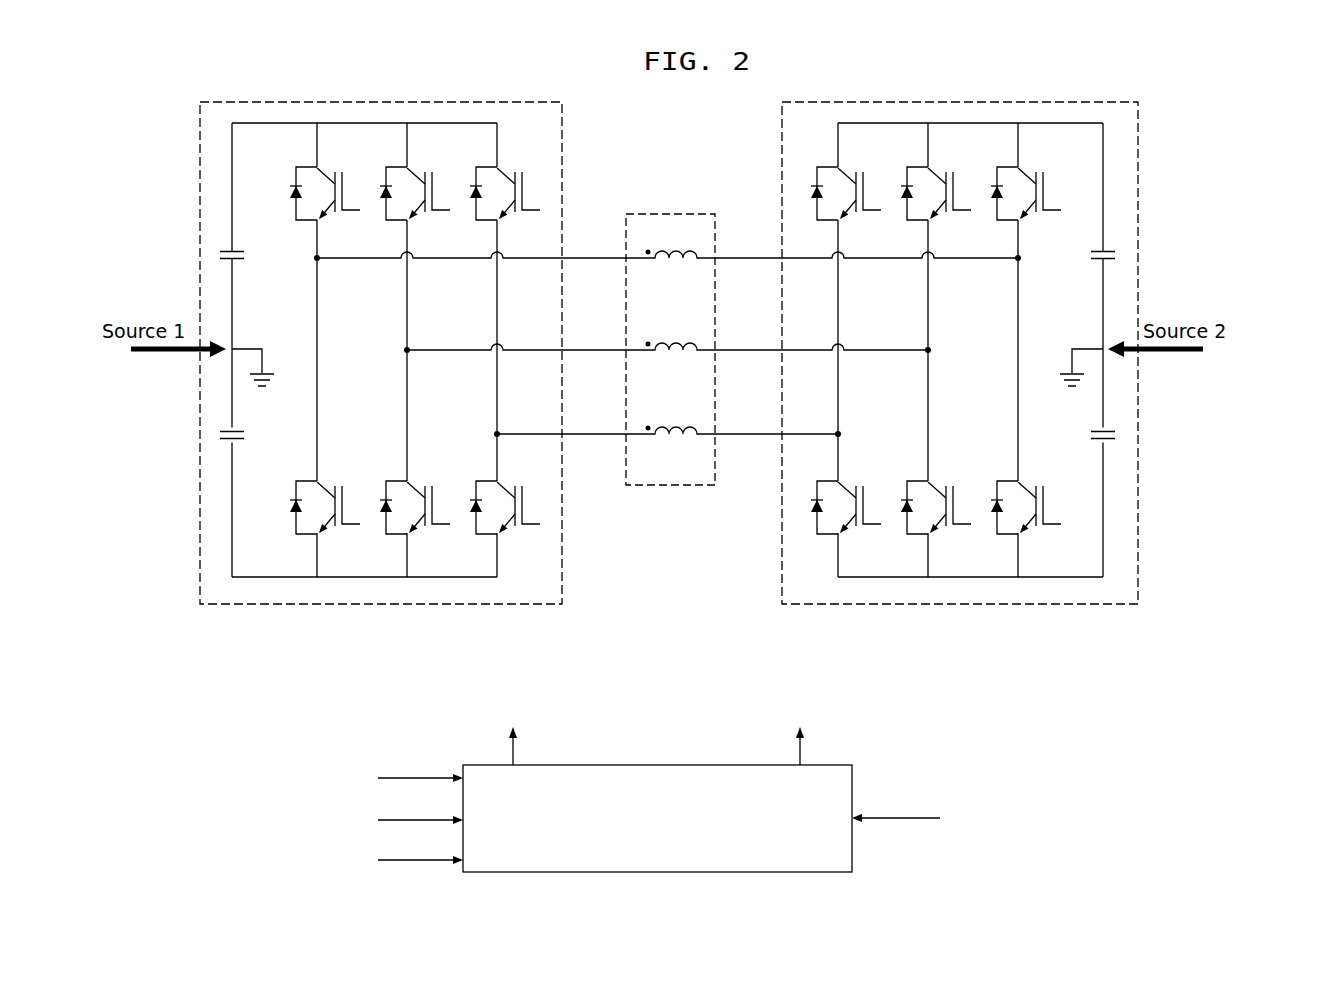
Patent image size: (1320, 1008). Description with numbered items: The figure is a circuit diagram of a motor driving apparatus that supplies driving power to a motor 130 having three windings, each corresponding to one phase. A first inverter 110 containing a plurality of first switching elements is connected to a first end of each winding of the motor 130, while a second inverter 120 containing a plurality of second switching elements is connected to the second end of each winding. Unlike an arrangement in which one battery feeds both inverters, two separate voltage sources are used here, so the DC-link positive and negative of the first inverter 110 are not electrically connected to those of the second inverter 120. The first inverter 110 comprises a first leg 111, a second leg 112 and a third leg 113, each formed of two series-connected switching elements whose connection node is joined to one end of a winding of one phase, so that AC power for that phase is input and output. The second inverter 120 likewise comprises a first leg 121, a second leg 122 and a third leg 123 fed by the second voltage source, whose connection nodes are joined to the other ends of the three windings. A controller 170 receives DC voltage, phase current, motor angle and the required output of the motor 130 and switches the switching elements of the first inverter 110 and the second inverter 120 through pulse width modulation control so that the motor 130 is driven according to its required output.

The first inverter 110 is at (240, 605).
The first leg 111 is at (317, 588).
The second leg 112 is at (407, 588).
The third leg 113 is at (497, 588).
The second inverter 120 is at (1100, 605).
The first leg 121 is at (838, 588).
The second leg 122 is at (928, 588).
The third leg 123 is at (1018, 588).
The motor 130 is at (678, 214).
The controller 170 is at (852, 853).